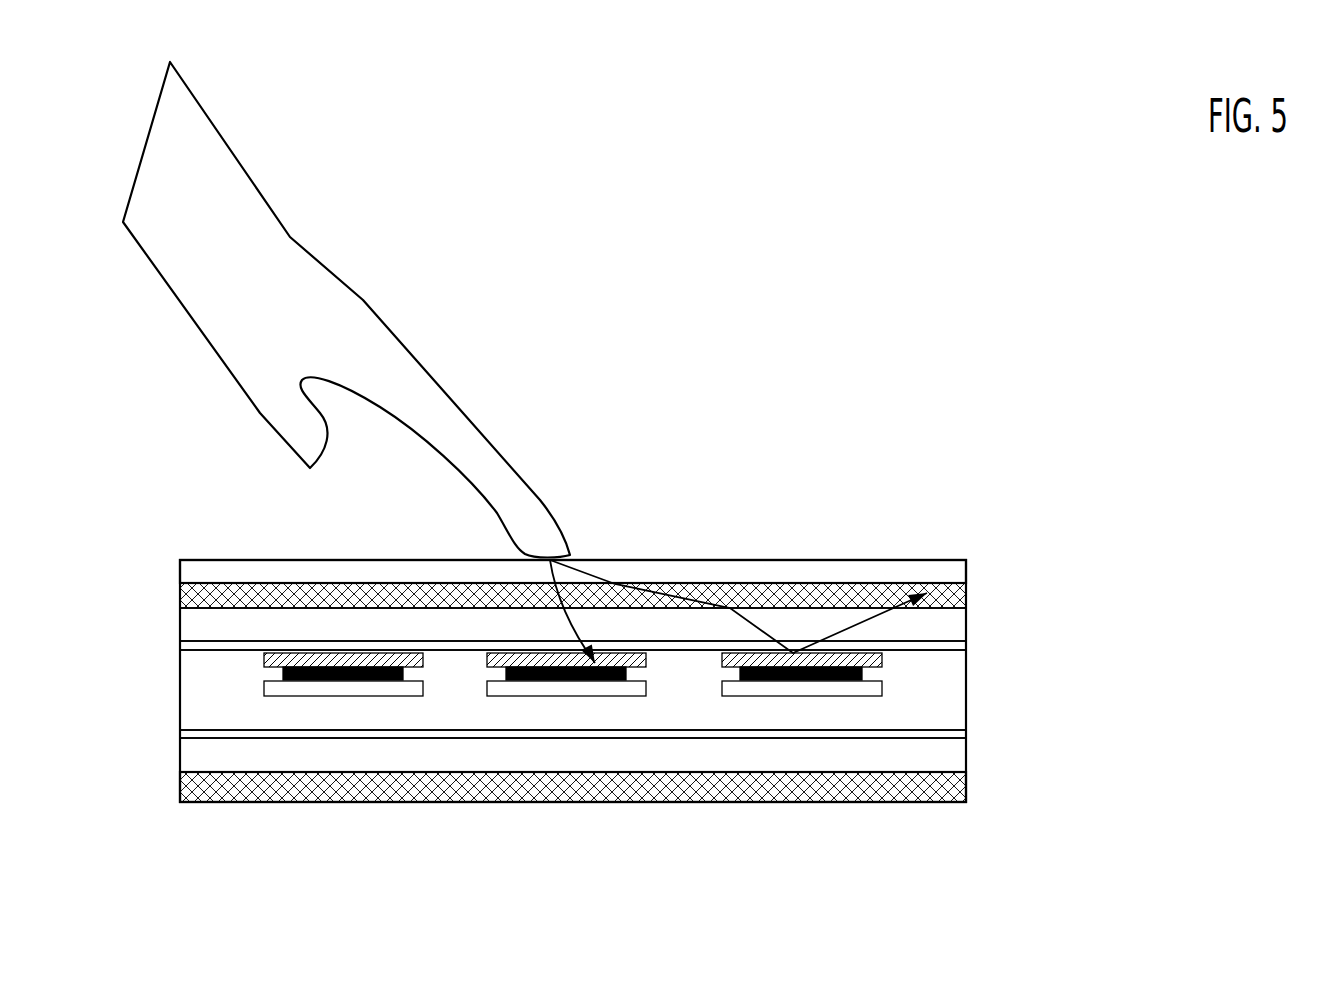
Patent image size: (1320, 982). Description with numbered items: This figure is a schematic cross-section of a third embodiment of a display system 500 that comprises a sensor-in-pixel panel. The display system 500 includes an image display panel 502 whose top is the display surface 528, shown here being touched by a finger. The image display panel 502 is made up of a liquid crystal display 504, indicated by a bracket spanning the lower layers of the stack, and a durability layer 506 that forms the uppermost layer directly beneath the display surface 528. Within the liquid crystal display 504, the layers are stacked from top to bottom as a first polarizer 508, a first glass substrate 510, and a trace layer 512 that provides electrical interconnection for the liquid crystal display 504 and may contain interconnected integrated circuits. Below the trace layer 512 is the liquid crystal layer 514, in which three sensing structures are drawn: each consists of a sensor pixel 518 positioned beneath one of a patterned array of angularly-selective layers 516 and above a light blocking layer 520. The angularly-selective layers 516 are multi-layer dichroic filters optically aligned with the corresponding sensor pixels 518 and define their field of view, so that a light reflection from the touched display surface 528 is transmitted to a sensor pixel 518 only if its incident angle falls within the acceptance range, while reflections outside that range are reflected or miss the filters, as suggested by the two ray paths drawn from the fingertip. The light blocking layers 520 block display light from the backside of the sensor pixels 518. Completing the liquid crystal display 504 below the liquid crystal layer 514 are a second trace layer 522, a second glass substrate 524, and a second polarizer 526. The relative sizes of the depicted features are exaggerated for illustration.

The display system 500 is at (968, 217).
The image display panel 502 is at (726, 697).
The liquid crystal display 504 is at (669, 729).
The durability layer 506 is at (967, 569).
The first polarizer 508 is at (967, 592).
The first glass substrate 510 is at (967, 619).
The trace layer 512 is at (967, 646).
The liquid crystal layer 514 is at (622, 763).
The angularly-selective layers 516 is at (500, 662).
The sensor pixels 518 is at (543, 680).
The light blocking layers 520 is at (592, 687).
The second trace layer 522 is at (967, 733).
The second glass substrate 524 is at (967, 757).
The second polarizer 526 is at (622, 799).
The display surface 528 is at (796, 558).